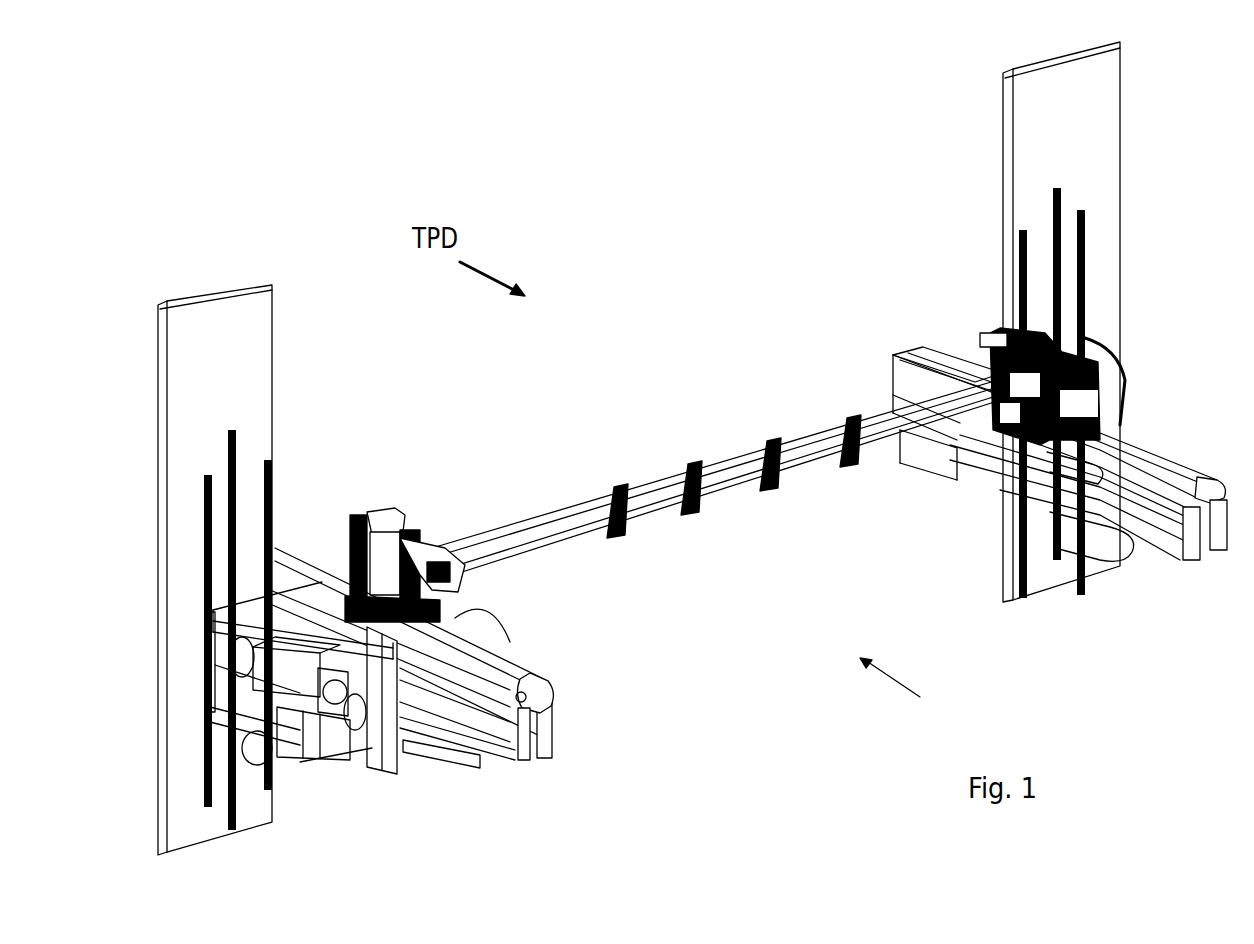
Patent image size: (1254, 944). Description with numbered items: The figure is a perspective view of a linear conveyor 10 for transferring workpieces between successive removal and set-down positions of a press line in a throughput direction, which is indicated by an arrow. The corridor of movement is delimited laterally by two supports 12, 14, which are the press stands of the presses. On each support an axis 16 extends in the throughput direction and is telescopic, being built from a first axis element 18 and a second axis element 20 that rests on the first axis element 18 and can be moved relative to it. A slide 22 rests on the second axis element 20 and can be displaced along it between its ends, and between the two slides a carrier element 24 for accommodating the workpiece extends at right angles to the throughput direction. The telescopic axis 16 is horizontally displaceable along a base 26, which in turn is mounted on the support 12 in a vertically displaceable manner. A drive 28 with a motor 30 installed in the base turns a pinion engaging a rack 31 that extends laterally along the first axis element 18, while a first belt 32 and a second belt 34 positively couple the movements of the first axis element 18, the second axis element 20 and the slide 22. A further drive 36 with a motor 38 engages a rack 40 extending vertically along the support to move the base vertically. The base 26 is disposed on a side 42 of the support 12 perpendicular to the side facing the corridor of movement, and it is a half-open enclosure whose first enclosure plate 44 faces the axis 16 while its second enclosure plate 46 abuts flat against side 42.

The linear conveyor 10 is at (906, 691).
The support 12 is at (245, 365).
The support 14 is at (1033, 133).
The axis 16 is at (617, 708).
The first axis element 18 is at (555, 733).
The second axis element 20 is at (523, 665).
The slide 22 is at (396, 515).
The carrier element 24 is at (722, 472).
The base 26 is at (404, 790).
The drive 28 is at (297, 788).
The motor 30 is at (315, 740).
The rack 31 is at (478, 760).
The first belt 32 is at (525, 750).
The second belt 34 is at (542, 675).
The drive 36 is at (210, 655).
The motor 38 is at (333, 693).
The rack 40 is at (238, 442).
The side 42 is at (229, 411).
The first enclosure plate 44 is at (357, 660).
The second enclosure plate 46 is at (243, 702).